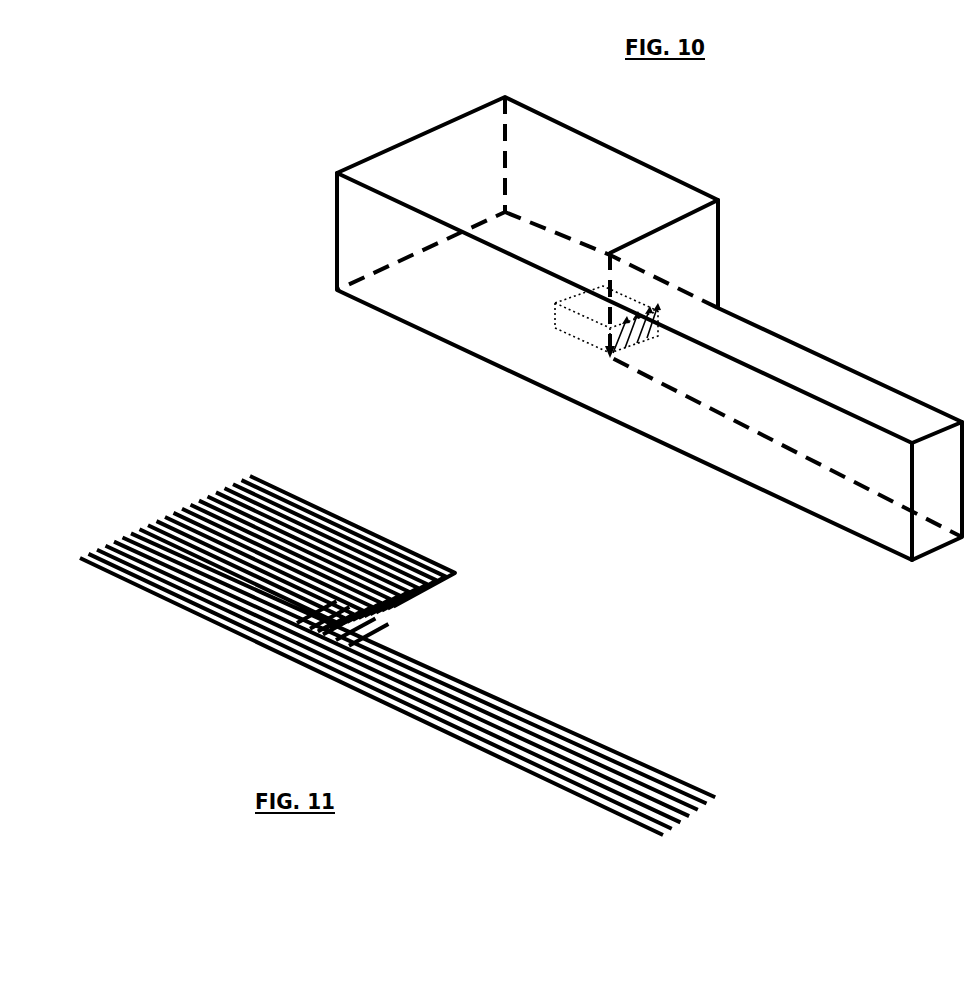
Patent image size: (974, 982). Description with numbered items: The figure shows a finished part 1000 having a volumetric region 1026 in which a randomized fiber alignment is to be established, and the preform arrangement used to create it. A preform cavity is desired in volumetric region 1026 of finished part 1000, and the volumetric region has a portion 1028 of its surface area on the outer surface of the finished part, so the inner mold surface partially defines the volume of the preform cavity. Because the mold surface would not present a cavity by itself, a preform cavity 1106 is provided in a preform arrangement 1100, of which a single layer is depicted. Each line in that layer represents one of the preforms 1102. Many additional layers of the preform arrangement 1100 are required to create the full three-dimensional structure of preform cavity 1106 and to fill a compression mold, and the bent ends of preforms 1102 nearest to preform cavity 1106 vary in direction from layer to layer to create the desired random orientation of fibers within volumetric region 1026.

In FIG. 10, the finished part 1000 is at (793, 162).
In FIG. 10, the volumetric region 1026 is at (592, 333).
In FIG. 10, the portion of surface area 1028 is at (648, 333).
In FIG. 11, the preform arrangement 1100 is at (397, 655).
In FIG. 11, the preforms 1102 is at (228, 626).
In FIG. 11, the preform cavity 1106 is at (388, 619).